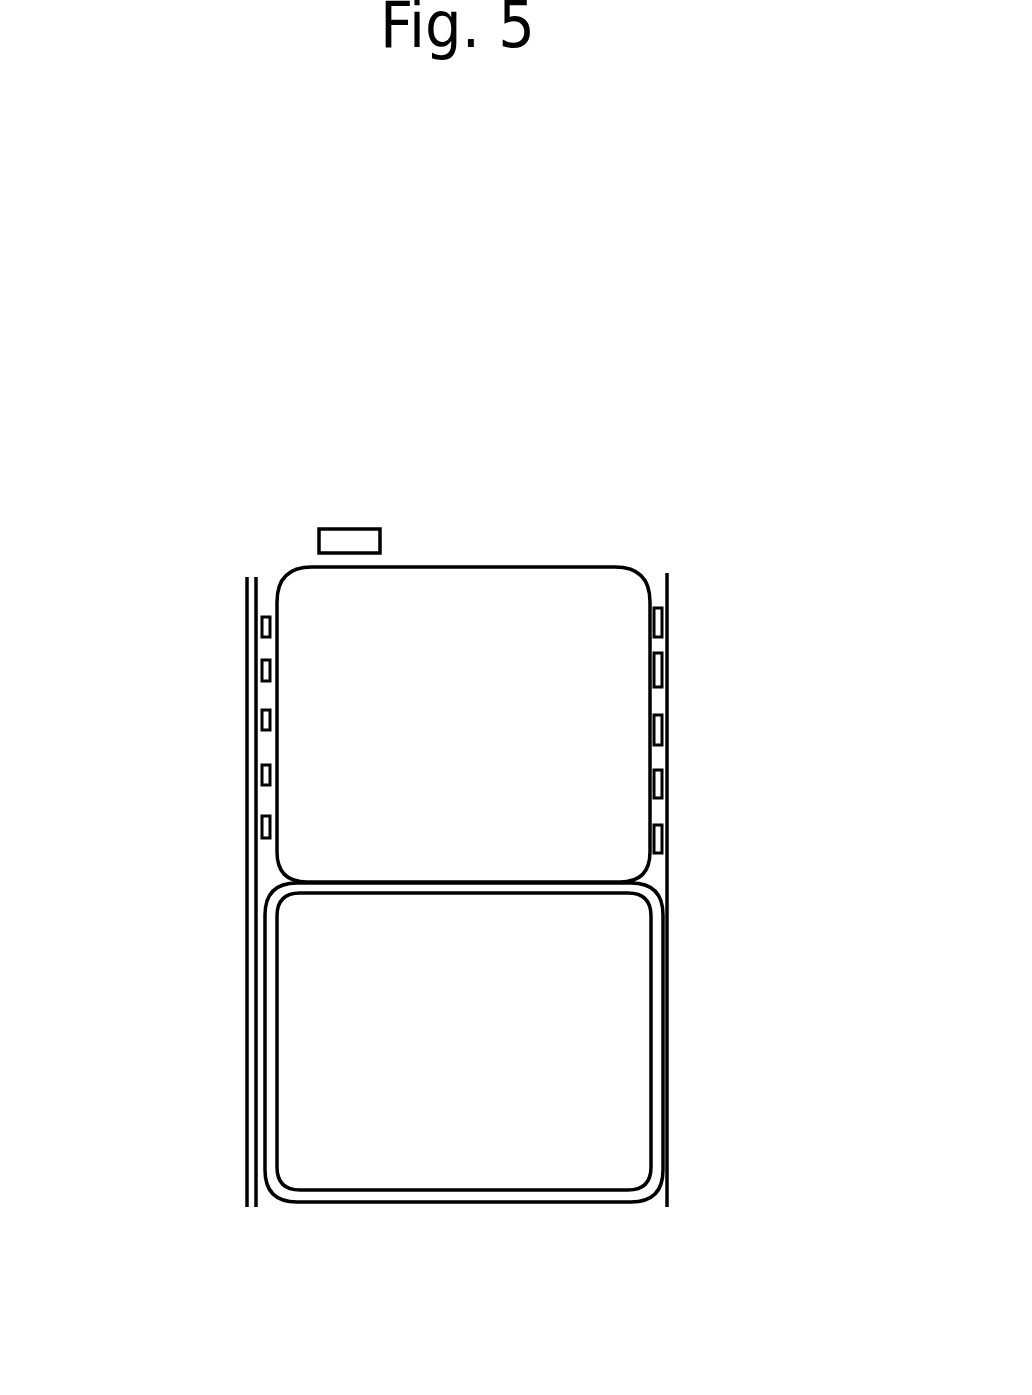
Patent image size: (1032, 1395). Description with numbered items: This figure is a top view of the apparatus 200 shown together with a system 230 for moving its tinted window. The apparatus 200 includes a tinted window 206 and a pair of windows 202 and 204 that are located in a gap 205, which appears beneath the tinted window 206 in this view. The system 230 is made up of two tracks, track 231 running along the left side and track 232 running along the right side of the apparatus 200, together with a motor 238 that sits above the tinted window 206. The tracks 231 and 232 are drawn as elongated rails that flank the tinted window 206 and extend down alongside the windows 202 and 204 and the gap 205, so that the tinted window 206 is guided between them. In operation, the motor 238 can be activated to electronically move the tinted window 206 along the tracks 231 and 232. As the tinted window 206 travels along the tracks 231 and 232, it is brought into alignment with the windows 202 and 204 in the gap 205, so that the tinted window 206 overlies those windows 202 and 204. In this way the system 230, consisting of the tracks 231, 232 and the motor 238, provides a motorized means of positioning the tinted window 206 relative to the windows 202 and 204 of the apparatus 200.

The apparatus 200 is at (687, 710).
The window 202 is at (666, 948).
The window 204 is at (617, 1107).
The gap 205 is at (273, 1077).
The tinted window 206 is at (595, 588).
The system 230 is at (353, 495).
The track 231 is at (247, 620).
The track 232 is at (668, 595).
The motor 238 is at (338, 533).